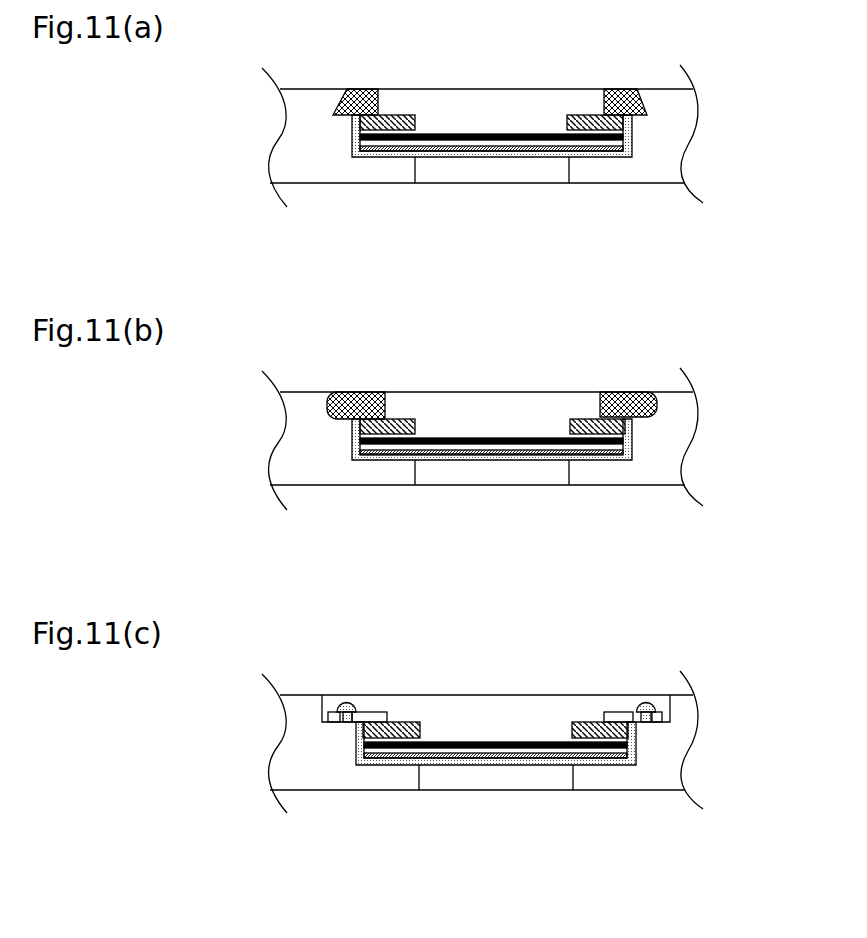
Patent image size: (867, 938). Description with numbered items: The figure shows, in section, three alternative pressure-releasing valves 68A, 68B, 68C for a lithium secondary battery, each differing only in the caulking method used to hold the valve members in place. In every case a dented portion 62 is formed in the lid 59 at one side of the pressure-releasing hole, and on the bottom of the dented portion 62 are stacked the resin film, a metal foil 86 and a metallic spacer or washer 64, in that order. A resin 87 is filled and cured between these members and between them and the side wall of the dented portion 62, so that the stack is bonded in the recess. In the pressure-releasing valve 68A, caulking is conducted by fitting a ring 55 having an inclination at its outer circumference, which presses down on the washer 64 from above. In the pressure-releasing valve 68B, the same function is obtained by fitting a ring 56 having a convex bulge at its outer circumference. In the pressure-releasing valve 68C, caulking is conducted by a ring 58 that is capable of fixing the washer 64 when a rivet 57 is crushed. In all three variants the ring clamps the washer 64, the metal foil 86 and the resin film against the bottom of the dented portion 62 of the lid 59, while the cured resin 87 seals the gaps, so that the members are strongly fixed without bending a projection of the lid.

In FIG. 11A, the ring having an inclination at the outer circumference 55 is at (360, 88).
In FIG. 11B, the ring having a convex at the outer circumference 56 is at (478, 379).
In FIG. 11C, the rivet 57 is at (479, 687).
In FIG. 11C, the ring 58 is at (495, 675).
In FIG. 11A, the lid 59 is at (293, 141).
In FIG. 11B, the lid 59 is at (436, 439).
In FIG. 11C, the lid 59 is at (436, 742).
In FIG. 11A, the dented portion 62 is at (530, 152).
In FIG. 11B, the dented portion 62 is at (491, 492).
In FIG. 11C, the dented portion 62 is at (495, 797).
In FIG. 11A, the metallic spacer (washer) 64 is at (567, 120).
In FIG. 11B, the metallic spacer (washer) 64 is at (492, 389).
In FIG. 11C, the metallic spacer (washer) 64 is at (495, 692).
In FIG. 11A, the pressure-releasing valve 68A is at (578, 82).
In FIG. 11B, the pressure-releasing valve 68B is at (436, 423).
In FIG. 11C, the pressure-releasing valve 68C is at (436, 727).
In FIG. 11A, the metal foil 86 is at (435, 134).
In FIG. 11B, the metal foil 86 is at (491, 391).
In FIG. 11C, the metal foil 86 is at (495, 698).
In FIG. 11A, the resin 87 is at (353, 136).
In FIG. 11B, the resin 87 is at (463, 477).
In FIG. 11C, the resin 87 is at (466, 779).